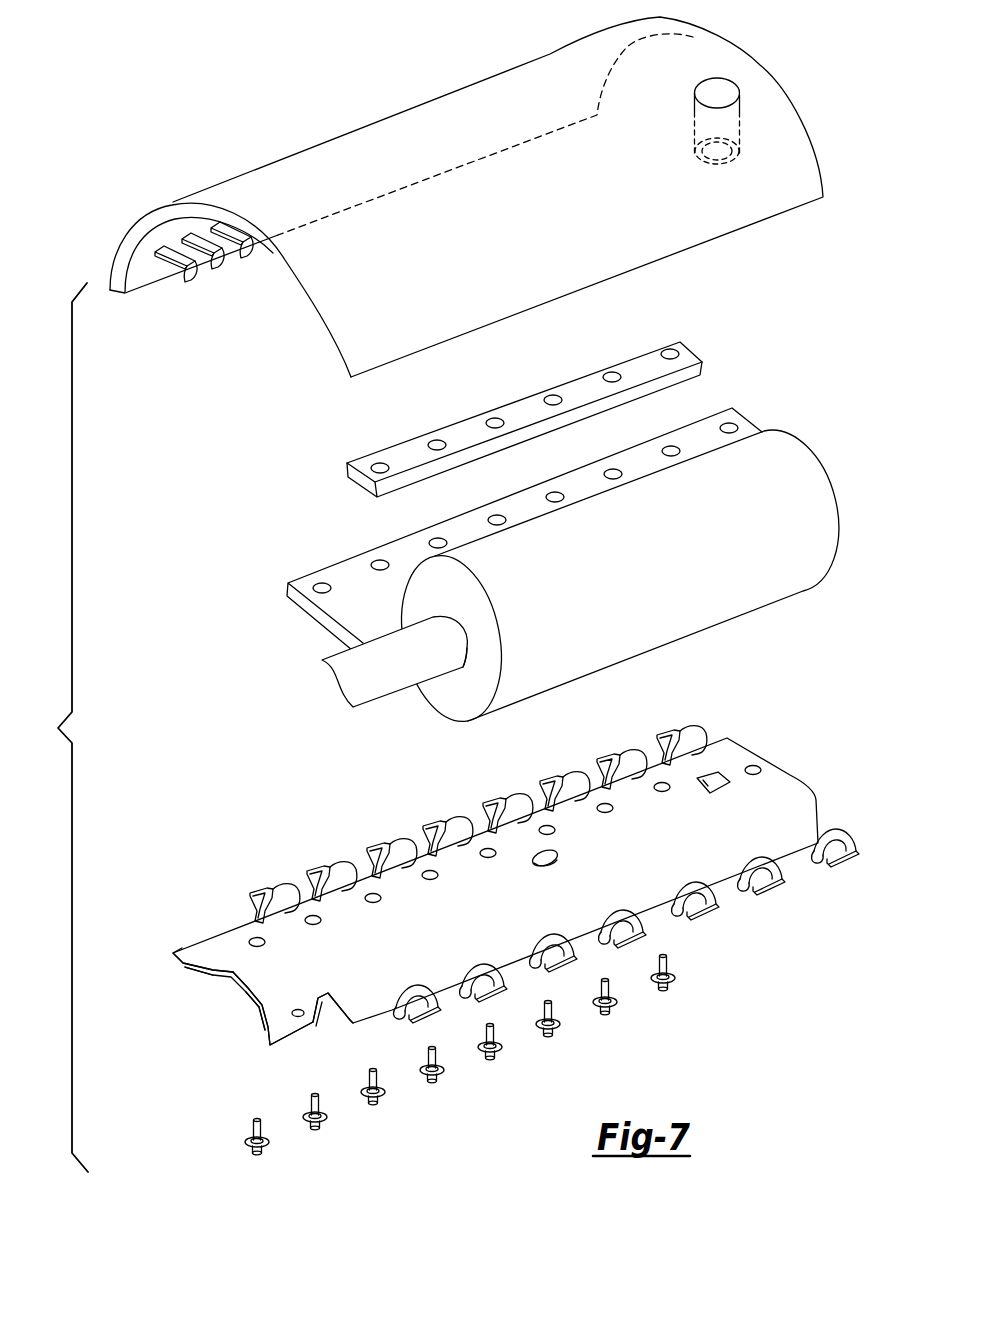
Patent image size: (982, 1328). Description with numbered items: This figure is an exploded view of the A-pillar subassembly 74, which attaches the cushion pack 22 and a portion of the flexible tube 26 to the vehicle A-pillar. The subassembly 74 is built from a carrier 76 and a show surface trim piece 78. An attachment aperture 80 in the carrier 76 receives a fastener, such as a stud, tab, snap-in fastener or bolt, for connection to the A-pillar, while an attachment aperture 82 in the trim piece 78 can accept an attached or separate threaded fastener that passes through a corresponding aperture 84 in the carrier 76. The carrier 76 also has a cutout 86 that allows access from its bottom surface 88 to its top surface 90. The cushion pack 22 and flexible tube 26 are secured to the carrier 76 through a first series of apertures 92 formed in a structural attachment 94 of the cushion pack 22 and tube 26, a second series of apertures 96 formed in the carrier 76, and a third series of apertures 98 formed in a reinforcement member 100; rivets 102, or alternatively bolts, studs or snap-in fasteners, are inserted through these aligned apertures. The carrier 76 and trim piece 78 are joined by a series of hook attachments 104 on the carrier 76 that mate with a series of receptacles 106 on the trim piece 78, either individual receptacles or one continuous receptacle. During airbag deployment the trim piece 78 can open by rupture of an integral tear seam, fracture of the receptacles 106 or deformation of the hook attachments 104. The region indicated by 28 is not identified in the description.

The cushion pack 22 is at (773, 575).
The flexible tube 26 is at (350, 667).
The shaft end junction 28 is at (448, 686).
The A-pillar subassembly 74 is at (774, 1032).
The carrier 76 is at (730, 742).
The show surface trim piece 78 is at (727, 213).
The attachment aperture 80 is at (532, 860).
The attachment aperture 82 is at (730, 122).
The aperture 84 is at (754, 772).
The cutout 86 is at (329, 1009).
The bottom surface 88 is at (240, 997).
The top surface 90 is at (222, 940).
The first series of apertures 92 is at (320, 587).
The structural attachment 94 is at (745, 432).
The second series of apertures 96 is at (663, 790).
The third series of apertures 98 is at (376, 465).
The reinforcement member 100 is at (680, 340).
The rivets 102 is at (437, 1058).
The hook attachments 104 is at (622, 752).
The receptacles 106 is at (201, 274).